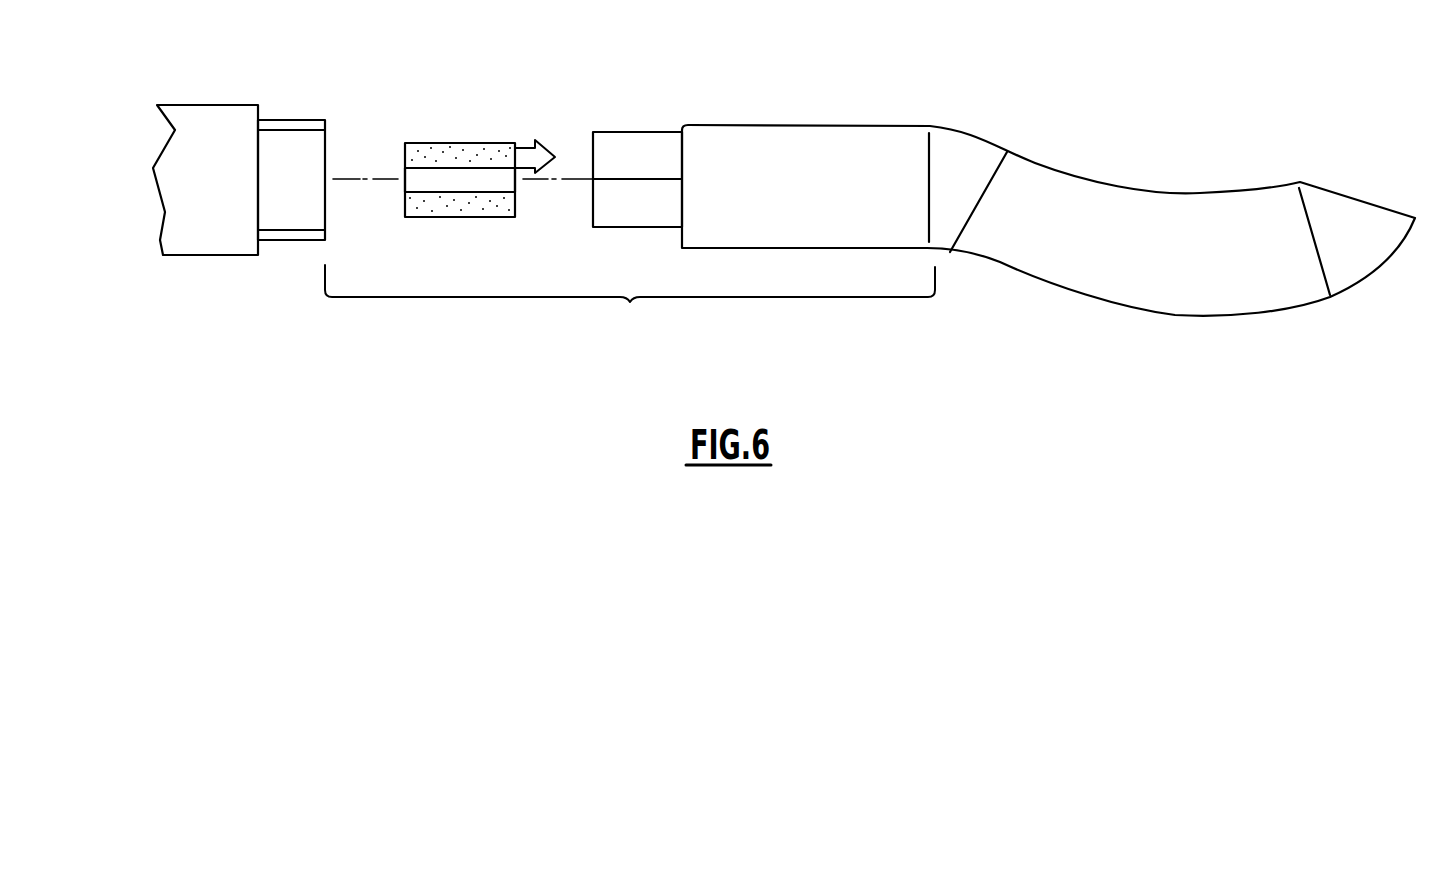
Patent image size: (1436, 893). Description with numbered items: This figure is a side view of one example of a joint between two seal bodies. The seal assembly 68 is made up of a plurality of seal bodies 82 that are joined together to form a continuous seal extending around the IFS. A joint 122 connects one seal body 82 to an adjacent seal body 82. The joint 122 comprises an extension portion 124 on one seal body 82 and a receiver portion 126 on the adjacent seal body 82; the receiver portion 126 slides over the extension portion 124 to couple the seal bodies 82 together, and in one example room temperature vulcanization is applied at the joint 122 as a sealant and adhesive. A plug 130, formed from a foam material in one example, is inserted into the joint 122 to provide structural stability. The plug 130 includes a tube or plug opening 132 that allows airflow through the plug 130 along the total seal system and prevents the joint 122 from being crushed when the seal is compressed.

The seal assembly 68 is at (630, 300).
The seal body 82 is at (213, 128).
The joint 122 is at (647, 78).
The extension portion 124 is at (622, 213).
The receiver portion 126 is at (295, 118).
The plug 130 is at (438, 142).
The plug opening 132 is at (467, 182).